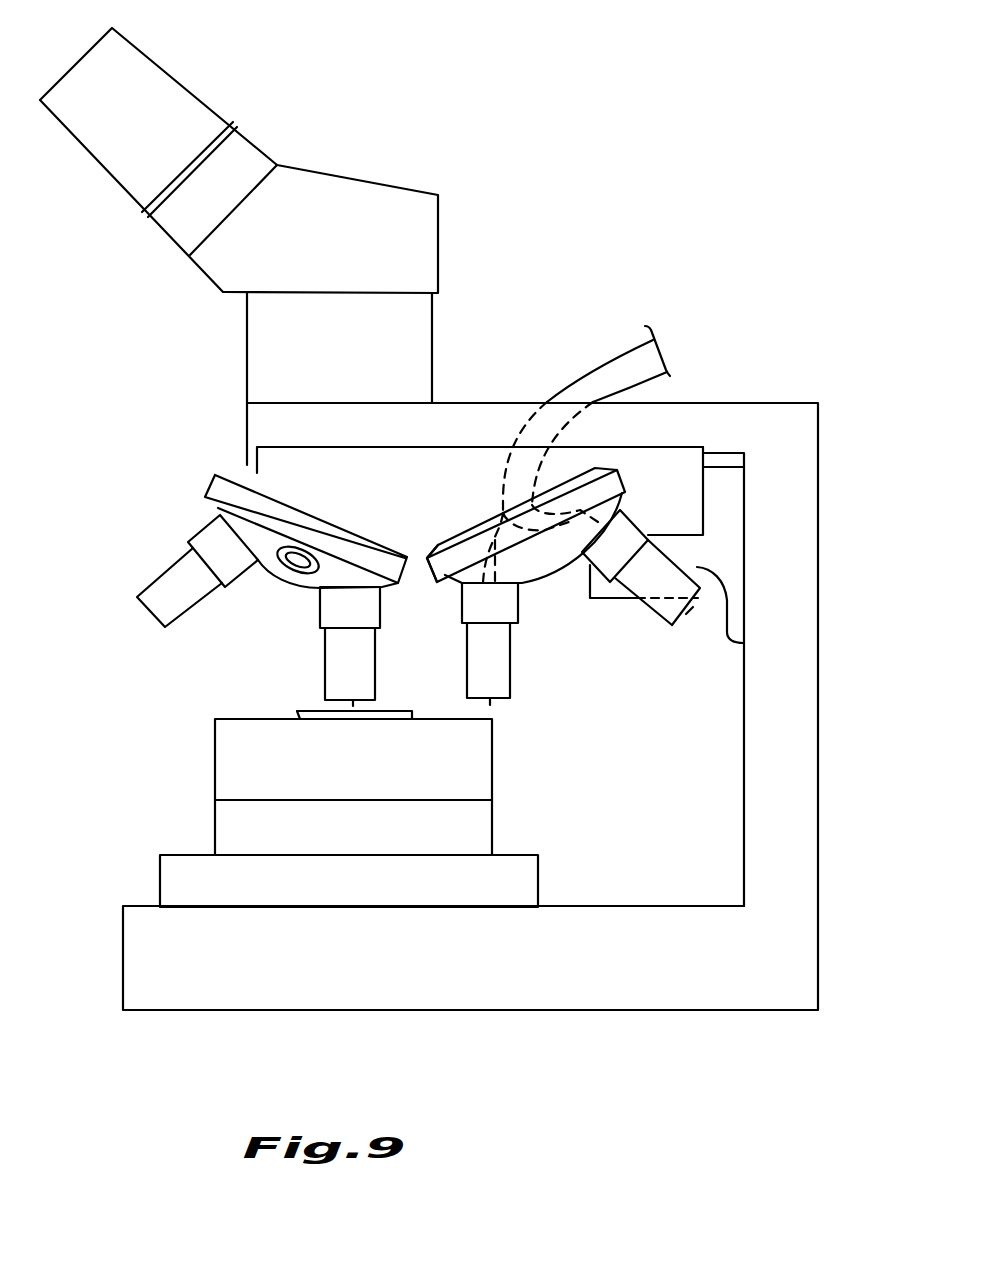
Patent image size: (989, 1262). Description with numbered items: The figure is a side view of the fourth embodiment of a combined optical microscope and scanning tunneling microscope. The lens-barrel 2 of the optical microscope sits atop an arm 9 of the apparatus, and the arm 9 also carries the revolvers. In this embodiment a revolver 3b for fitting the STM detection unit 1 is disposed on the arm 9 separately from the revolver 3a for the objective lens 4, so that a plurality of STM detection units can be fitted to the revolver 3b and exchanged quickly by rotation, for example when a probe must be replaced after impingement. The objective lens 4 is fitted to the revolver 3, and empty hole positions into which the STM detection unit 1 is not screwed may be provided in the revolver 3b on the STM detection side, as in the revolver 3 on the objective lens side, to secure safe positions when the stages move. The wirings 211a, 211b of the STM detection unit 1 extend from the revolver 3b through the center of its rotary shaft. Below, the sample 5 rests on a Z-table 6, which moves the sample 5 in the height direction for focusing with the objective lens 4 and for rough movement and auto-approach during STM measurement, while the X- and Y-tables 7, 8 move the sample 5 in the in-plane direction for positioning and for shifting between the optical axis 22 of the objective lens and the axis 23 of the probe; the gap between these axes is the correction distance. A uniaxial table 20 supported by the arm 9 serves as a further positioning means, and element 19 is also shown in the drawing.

The STM detection unit 1 is at (672, 625).
The lens-barrel 2 is at (423, 203).
The revolver 3 is at (218, 490).
The revolver for the objective lens 3a is at (608, 487).
The revolver for fitting the STM detection unit 3b is at (445, 532).
The objective lens 4 is at (163, 600).
The sample 5 is at (303, 713).
The Z-table 6 is at (243, 765).
The X-table 7 is at (228, 828).
The Y-table 8 is at (172, 885).
The arm 9 is at (807, 727).
The housing 19 is at (682, 555).
The uniaxial table 20 is at (690, 497).
The optical axis of the objective lens 22 is at (353, 703).
The axis of the probe 23 is at (490, 680).
The wiring 211a is at (598, 372).
The wiring 211b is at (590, 558).